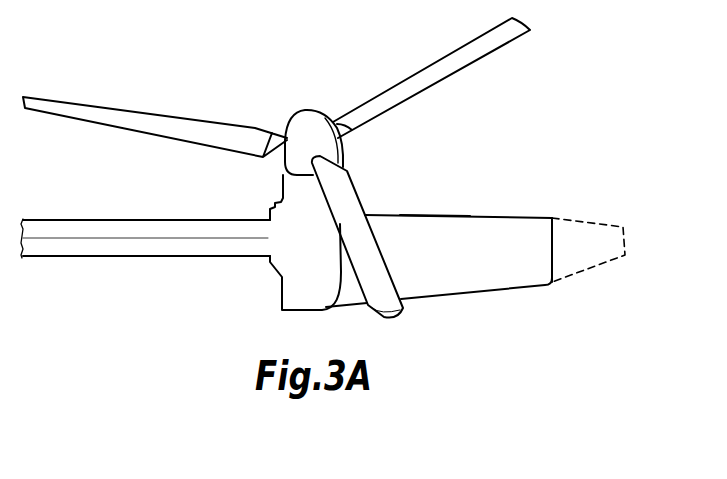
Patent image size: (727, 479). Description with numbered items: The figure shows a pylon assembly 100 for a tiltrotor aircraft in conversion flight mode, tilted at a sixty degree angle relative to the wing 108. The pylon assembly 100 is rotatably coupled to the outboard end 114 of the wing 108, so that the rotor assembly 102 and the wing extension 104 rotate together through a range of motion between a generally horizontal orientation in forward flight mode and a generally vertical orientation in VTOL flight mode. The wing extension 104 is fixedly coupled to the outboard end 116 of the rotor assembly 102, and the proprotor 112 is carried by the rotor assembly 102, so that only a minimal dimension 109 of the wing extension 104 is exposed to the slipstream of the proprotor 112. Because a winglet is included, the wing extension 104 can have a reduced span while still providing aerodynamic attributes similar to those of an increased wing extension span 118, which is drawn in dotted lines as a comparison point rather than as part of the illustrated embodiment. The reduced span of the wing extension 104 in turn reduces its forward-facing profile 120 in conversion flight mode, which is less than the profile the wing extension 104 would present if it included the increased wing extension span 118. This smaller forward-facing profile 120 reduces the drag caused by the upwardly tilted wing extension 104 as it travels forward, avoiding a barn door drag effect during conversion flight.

The pylon assembly 100 is at (480, 136).
The rotor assembly 102 is at (285, 190).
The wing extension 104 is at (442, 283).
The wing 108 is at (80, 223).
The minimal dimension of wing extension 109 is at (432, 213).
The proprotor 112 is at (308, 117).
The outboard end of wing 114 is at (268, 243).
The outboard end of rotor assembly 116 is at (340, 283).
The increased wing extension span 118 is at (588, 218).
The forward-facing profile 120 is at (518, 216).